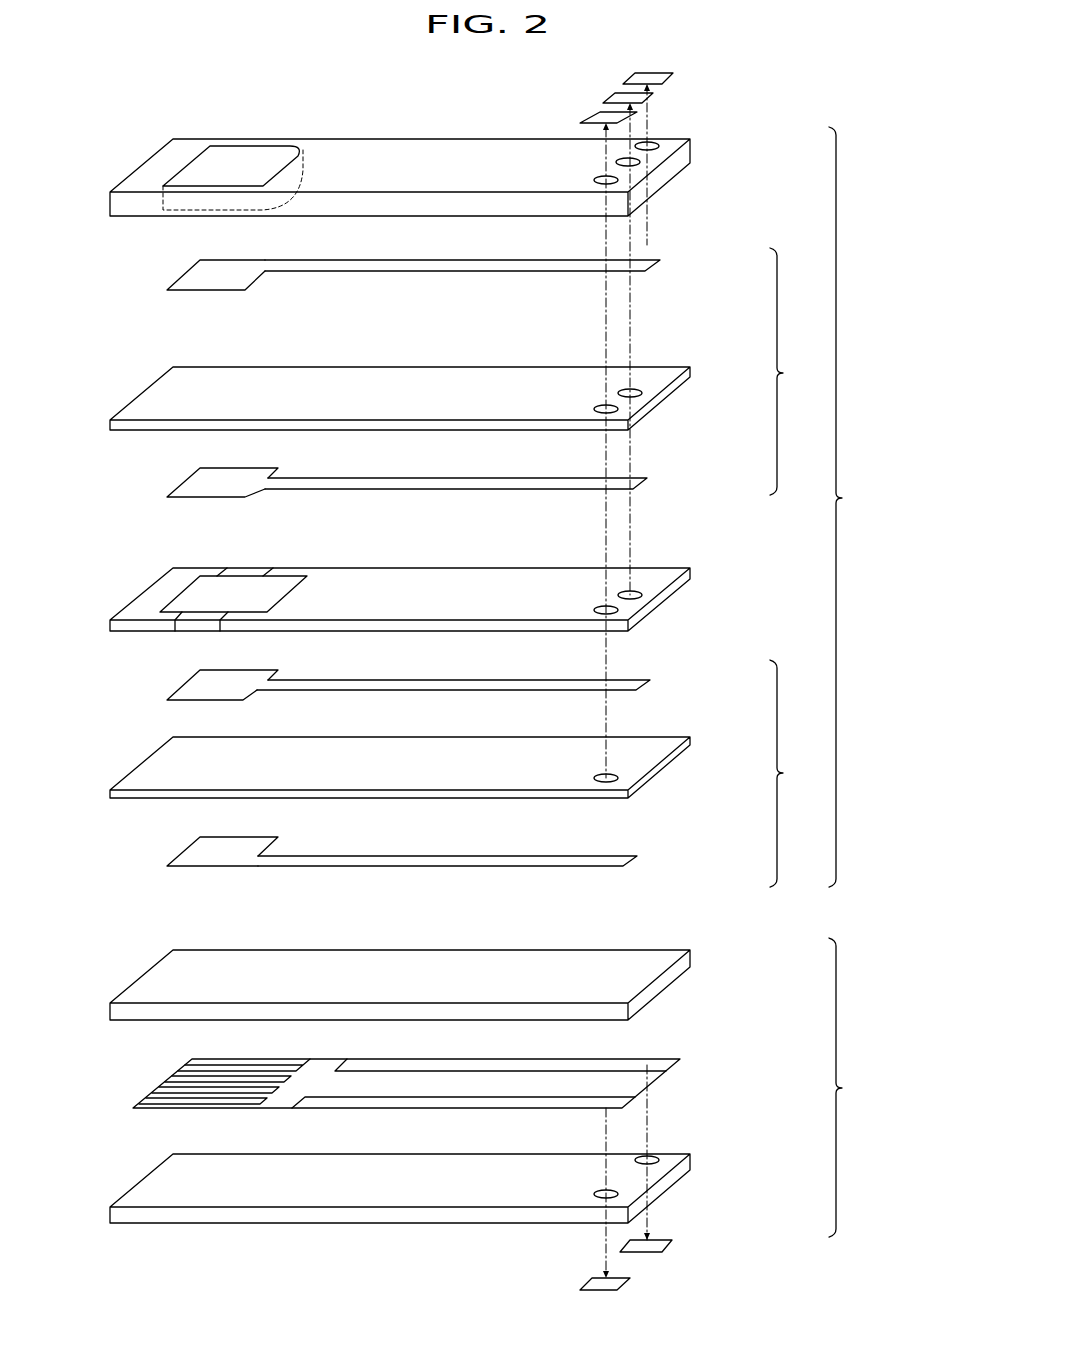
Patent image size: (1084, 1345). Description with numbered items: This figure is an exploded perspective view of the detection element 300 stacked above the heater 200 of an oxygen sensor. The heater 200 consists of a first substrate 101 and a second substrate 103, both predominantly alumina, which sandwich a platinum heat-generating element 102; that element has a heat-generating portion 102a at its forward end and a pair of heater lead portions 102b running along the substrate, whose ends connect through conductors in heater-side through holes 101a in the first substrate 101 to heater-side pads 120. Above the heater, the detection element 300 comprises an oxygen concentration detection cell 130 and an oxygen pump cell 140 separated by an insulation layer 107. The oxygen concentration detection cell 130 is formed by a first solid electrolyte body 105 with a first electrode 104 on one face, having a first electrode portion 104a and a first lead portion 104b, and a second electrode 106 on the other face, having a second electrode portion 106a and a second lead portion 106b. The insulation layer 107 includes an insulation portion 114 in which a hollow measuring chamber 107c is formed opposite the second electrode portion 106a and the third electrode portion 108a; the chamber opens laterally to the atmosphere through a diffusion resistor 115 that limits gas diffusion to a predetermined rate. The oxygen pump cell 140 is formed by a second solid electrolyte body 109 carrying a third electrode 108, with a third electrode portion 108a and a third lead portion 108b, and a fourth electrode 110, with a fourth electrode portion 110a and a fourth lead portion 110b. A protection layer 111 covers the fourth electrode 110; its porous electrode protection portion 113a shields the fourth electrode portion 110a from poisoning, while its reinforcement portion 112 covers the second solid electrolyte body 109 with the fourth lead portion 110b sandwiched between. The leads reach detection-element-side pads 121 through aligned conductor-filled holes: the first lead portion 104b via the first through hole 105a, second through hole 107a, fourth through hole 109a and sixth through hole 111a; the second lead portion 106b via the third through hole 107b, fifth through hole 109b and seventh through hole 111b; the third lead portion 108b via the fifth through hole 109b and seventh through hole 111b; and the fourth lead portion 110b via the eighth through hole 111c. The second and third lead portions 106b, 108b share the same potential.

The first substrate 101 is at (436, 1171).
The heater-side through holes 101a is at (608, 1190).
The heat-generating element 102 is at (420, 1081).
The heat-generating portion 102a is at (178, 1082).
The heater lead portions 102b is at (447, 1103).
The second substrate 103 is at (683, 995).
The first electrode 104 is at (441, 871).
The first electrode portion 104a is at (222, 850).
The first lead portion 104b is at (455, 857).
The first solid electrolyte body 105 is at (436, 767).
The first through hole 105a is at (594, 778).
The second electrode 106 is at (443, 700).
The second electrode portion 106a is at (222, 682).
The second lead portion 106b is at (455, 682).
The insulation layer 107 is at (419, 583).
The second through hole 107a is at (594, 610).
The third through hole 107b is at (618, 595).
The measuring chamber 107c is at (263, 600).
The third electrode 108 is at (442, 503).
The third electrode portion 108a is at (222, 480).
The third lead portion 108b is at (455, 480).
The second solid electrolyte body 109 is at (436, 398).
The fourth through hole 109a is at (594, 409).
The fifth through hole 109b is at (618, 392).
The fourth electrode 110 is at (446, 295).
The fourth electrode portion 110a is at (222, 272).
The fourth lead portion 110b is at (455, 262).
The protection layer 111 is at (436, 145).
The sixth through hole 111a is at (594, 180).
The seventh through hole 111b is at (616, 162).
The eighth through hole 111c is at (655, 143).
The reinforcement portion 112 is at (388, 148).
The porous electrode protection portion 113a is at (232, 152).
The insulation portion 114 is at (390, 585).
The diffusion resistor 115 is at (205, 617).
The heater-side pads 120 is at (632, 1286).
The detection-element-side pads 121 is at (623, 77).
The oxygen concentration detection cell 130 is at (798, 773).
The oxygen pump cell 140 is at (798, 371).
The heater 200 is at (860, 1087).
The detection element 300 is at (860, 507).